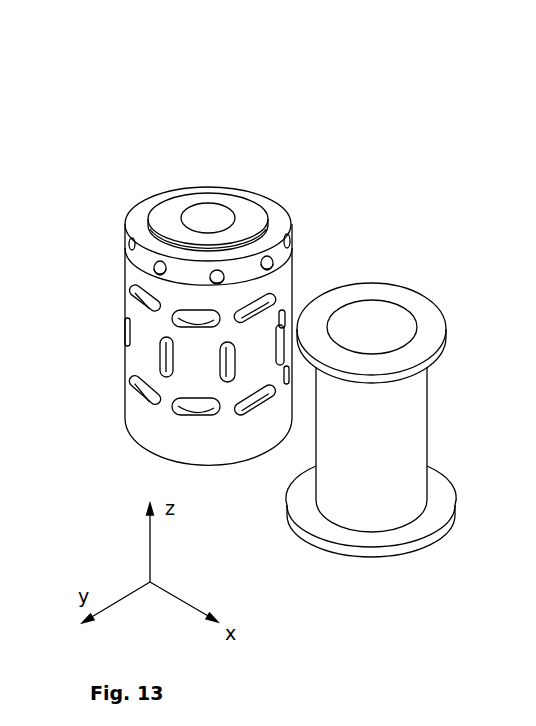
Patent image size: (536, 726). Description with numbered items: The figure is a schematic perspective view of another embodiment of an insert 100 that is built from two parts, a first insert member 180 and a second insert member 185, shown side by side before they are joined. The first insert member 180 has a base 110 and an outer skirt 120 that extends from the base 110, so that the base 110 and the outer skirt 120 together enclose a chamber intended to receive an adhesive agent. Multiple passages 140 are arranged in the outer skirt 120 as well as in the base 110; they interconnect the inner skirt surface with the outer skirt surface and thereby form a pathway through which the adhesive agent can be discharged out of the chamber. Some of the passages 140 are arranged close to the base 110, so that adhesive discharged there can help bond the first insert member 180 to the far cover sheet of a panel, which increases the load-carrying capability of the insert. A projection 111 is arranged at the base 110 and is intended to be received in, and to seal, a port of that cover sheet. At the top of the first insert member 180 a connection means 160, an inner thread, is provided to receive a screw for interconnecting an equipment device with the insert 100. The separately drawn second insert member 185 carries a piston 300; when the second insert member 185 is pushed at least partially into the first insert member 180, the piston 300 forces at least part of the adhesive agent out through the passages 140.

The insert 100 is at (214, 288).
The base 110 is at (214, 288).
The projection 111 is at (168, 199).
The outer skirt 120 is at (168, 462).
The passages 140 is at (167, 323).
The connection means 160 is at (240, 151).
The first insert member 180 is at (213, 160).
The second insert member 185 is at (395, 227).
The piston 300 is at (389, 314).